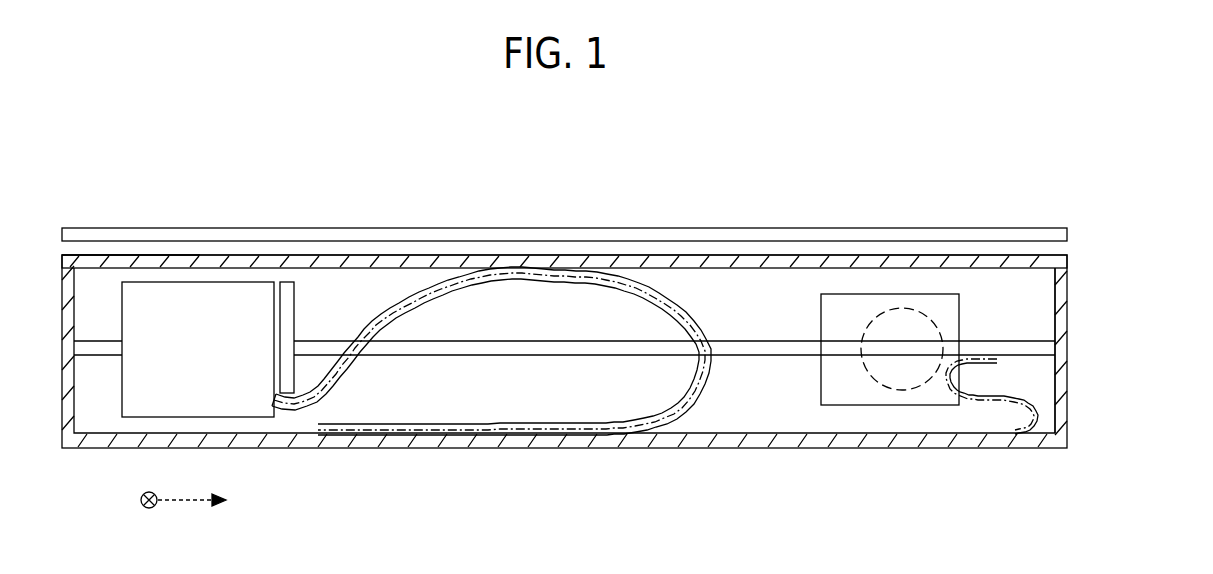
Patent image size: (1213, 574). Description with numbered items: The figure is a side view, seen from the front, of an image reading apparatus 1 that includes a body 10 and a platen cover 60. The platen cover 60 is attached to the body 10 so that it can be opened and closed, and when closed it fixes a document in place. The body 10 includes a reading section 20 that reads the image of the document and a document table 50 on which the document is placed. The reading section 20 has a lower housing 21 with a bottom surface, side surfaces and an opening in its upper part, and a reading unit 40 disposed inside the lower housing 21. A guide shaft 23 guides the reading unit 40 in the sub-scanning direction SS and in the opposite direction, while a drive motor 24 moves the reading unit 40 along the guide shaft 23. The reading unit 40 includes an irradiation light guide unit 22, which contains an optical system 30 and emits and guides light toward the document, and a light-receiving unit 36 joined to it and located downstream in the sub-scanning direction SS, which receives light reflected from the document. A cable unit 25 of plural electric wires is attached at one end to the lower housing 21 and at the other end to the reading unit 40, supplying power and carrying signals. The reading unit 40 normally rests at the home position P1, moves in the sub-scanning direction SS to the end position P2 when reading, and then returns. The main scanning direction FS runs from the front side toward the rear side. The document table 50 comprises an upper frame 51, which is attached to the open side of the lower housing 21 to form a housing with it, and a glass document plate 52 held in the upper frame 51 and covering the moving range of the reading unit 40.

The image reading apparatus 1 is at (1073, 210).
The body 10 is at (1168, 218).
The reading section 20 is at (1072, 300).
The lower housing 21 is at (1063, 325).
The irradiation light guide unit 22 is at (200, 284).
The guide shaft 23 is at (782, 347).
The drive motor 24 is at (905, 392).
The cable unit 25 is at (653, 300).
The optical system 30 is at (220, 272).
The light-receiving unit 36 is at (291, 268).
The reading unit 40 is at (491, 297).
The document table 50 is at (1072, 262).
The upper frame 51 is at (88, 262).
The document plate 52 is at (151, 262).
The platen cover 60 is at (948, 233).
The home position P1 is at (307, 413).
The end position P2 is at (992, 417).
The main scanning direction FS is at (148, 516).
The sub-scanning direction SS is at (208, 503).